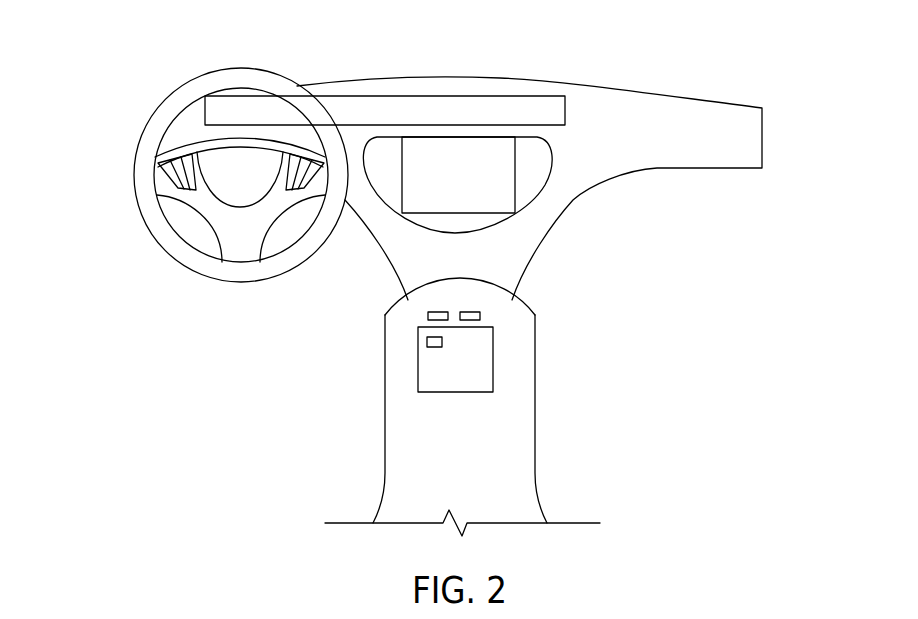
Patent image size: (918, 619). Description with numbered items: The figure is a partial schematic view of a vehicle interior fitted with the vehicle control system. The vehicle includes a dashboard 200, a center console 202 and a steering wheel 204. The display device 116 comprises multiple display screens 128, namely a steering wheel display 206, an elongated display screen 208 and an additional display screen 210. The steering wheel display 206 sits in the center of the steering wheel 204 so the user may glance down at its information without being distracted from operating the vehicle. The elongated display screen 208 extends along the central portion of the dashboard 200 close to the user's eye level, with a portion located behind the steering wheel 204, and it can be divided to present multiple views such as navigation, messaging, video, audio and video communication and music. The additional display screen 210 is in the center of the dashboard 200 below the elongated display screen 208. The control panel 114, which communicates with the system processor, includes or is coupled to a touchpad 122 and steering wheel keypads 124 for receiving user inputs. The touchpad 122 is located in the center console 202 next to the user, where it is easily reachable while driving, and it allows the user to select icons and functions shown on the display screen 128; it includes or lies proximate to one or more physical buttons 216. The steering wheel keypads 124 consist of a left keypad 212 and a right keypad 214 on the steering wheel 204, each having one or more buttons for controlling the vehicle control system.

The control panel 114 is at (410, 358).
The display device 116 is at (421, 153).
The touchpad 122 is at (482, 370).
The steering wheel keypads 124 is at (148, 182).
The display screen 128 is at (226, 167).
The dashboard 200 is at (513, 77).
The center console 202 is at (520, 328).
The steering wheel 204 is at (163, 248).
The steering wheel display 206 is at (257, 168).
The elongated display screen 208 is at (565, 113).
The additional display screen 210 is at (503, 196).
The left keypad 212 is at (177, 175).
The right keypad 214 is at (302, 182).
The physical buttons 216 is at (472, 311).